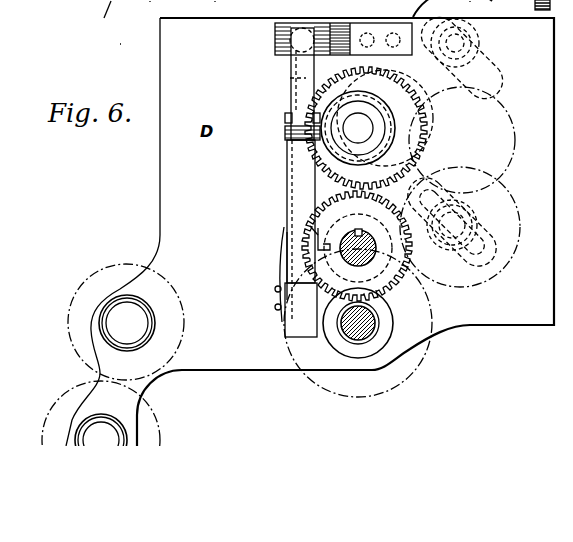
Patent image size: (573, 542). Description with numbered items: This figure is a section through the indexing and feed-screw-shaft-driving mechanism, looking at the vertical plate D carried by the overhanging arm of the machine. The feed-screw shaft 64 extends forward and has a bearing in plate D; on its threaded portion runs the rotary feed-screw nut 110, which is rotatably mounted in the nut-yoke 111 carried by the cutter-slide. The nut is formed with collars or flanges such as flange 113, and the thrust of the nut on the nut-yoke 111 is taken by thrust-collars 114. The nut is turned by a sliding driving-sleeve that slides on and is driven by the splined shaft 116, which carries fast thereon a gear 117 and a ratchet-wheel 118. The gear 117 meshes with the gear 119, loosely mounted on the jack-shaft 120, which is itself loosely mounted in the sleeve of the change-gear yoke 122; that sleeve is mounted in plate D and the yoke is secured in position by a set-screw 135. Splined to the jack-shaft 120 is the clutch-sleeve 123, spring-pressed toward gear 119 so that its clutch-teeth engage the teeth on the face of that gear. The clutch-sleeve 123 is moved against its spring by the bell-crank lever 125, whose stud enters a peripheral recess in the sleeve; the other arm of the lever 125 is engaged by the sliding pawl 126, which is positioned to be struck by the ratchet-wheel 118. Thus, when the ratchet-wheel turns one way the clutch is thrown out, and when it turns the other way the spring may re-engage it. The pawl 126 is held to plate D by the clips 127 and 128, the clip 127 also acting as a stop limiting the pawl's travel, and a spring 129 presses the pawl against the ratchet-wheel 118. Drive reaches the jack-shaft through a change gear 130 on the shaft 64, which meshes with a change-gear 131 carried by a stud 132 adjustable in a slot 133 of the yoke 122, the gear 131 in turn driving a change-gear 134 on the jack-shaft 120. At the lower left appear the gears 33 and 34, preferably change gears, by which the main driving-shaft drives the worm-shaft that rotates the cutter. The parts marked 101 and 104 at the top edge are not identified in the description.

The rotary feed-screw nut 110 is at (89, 10).
The nut-yoke 111 is at (138, 8).
The flange 113 is at (202, 6).
The thrust-collars 114 is at (143, 23).
The casing 101 is at (478, 5).
The casing wall 104 is at (524, 5).
The bell-crank lever 125 is at (300, 62).
The clip 128 is at (278, 78).
The gear 119 is at (300, 152).
The sliding pawl 126 is at (293, 188).
The gear 117 is at (310, 226).
The ratchet-wheel 118 is at (320, 243).
The spring 129 is at (298, 270).
The clip 127 is at (301, 310).
The splined shaft 116 is at (371, 230).
The feed-screw shaft 64 is at (378, 325).
The change gear 130 is at (432, 321).
The jack-shaft 120 is at (358, 128).
The change-gear yoke 122 is at (437, 95).
The clutch-sleeve 123 is at (387, 138).
The change-gear 134 is at (430, 141).
The slot 133 is at (443, 189).
The change-gear 131 is at (506, 190).
The stud 132 is at (462, 218).
The set-screw 135 is at (468, 44).
The gear 34 is at (104, 273).
The gear 33 is at (61, 395).